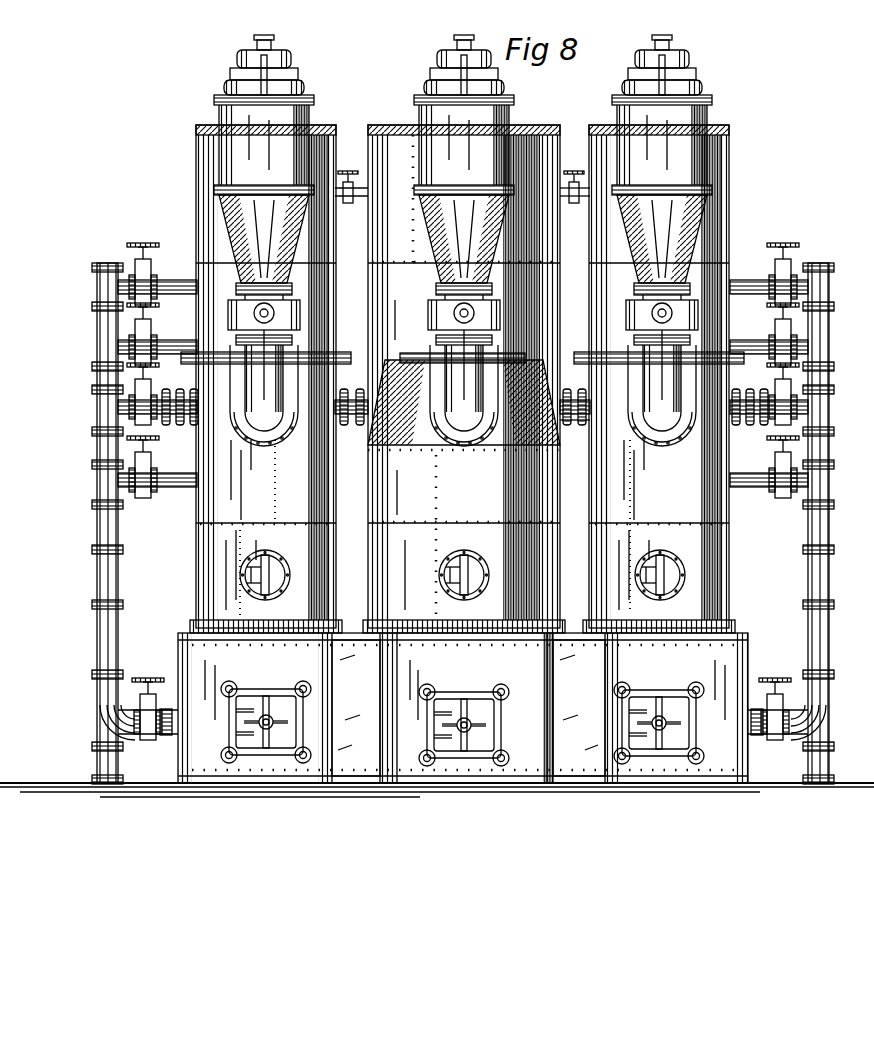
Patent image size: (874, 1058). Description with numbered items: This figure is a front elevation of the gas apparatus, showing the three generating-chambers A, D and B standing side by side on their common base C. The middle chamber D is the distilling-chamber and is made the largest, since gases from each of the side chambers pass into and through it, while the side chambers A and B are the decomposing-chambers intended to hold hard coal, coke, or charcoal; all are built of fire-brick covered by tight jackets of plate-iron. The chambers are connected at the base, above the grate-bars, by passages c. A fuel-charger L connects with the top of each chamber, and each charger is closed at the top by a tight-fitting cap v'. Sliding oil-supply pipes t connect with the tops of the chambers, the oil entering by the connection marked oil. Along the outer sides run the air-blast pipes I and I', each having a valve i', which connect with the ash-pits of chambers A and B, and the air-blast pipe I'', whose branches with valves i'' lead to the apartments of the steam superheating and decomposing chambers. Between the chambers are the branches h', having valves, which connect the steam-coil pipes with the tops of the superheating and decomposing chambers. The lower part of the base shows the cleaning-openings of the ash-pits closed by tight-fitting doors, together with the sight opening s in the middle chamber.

The decomposing-chamber A is at (236, 492).
The distilling-chamber D is at (464, 369).
The decomposing-chamber B is at (638, 487).
The tight-fitting cap v' is at (463, 70).
The fuel-charger L is at (246, 211).
The branch h' is at (462, 176).
The air-blast pipe I is at (100, 523).
The air-blast pipe I'' is at (826, 523).
The air-blast pipe I' is at (462, 727).
The valve i' is at (462, 703).
The valve i'' is at (463, 370).
The sliding oil-supply pipe t is at (463, 394).
The oil inlet oil is at (575, 429).
The common base C is at (180, 645).
The passage c is at (468, 708).
The sight porthole s is at (464, 575).